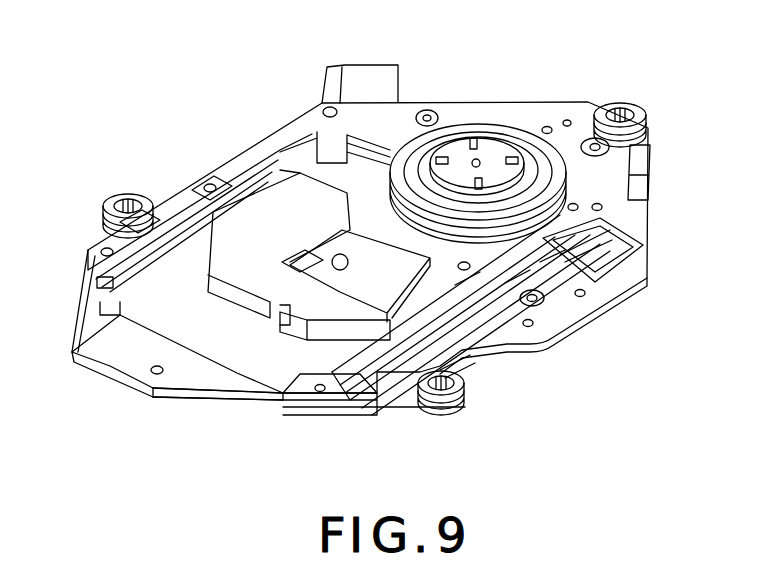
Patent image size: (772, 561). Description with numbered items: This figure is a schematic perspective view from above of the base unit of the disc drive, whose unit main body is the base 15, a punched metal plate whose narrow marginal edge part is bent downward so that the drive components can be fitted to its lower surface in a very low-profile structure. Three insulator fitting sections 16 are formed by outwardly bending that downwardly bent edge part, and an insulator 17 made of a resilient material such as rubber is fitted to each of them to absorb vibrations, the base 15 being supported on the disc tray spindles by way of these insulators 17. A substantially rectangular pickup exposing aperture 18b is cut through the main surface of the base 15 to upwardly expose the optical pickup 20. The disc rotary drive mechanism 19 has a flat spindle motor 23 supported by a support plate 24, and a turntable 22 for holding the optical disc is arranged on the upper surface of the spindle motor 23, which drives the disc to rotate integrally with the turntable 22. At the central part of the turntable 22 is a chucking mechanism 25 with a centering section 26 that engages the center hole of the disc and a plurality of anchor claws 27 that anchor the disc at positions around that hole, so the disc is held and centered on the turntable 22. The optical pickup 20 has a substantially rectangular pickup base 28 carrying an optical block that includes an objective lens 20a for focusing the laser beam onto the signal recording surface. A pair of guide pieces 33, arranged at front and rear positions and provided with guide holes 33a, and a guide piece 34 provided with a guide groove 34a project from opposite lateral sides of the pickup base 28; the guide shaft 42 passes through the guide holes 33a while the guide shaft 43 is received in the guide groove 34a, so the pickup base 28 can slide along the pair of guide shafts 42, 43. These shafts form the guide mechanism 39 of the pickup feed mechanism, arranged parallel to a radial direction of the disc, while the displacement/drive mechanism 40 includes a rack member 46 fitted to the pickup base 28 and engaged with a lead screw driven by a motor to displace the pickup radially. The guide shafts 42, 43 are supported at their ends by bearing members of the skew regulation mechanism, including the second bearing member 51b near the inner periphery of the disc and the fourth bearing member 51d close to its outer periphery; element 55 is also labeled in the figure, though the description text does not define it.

The base 15 is at (400, 117).
The insulator fitting section 16 is at (108, 230).
The insulator 17 is at (112, 198).
The pickup exposing aperture 18b is at (72, 352).
The disc rotary drive mechanism 19 is at (703, 298).
The optical pickup 20 is at (290, 268).
The objective lens 20a is at (333, 268).
The turntable 22 is at (633, 277).
The spindle motor 23 is at (620, 290).
The support plate 24 is at (470, 353).
The chucking mechanism 25 is at (488, 150).
The centering section 26 is at (490, 183).
The anchor claw 27 is at (440, 156).
The pickup base 28 is at (207, 292).
The guide piece 33 is at (550, 262).
The guide hole 33a is at (457, 362).
The guide piece 34 is at (262, 150).
The guide groove 34a is at (247, 177).
The guide mechanism 39 is at (510, 280).
The displacement/drive mechanism 40 is at (612, 248).
The guide shaft 42 is at (362, 400).
The guide shaft 43 is at (296, 155).
The rack member 46 is at (467, 280).
The second bearing member 51b is at (342, 133).
The fourth bearing member 51d is at (100, 287).
The pressing plate 55 is at (603, 237).